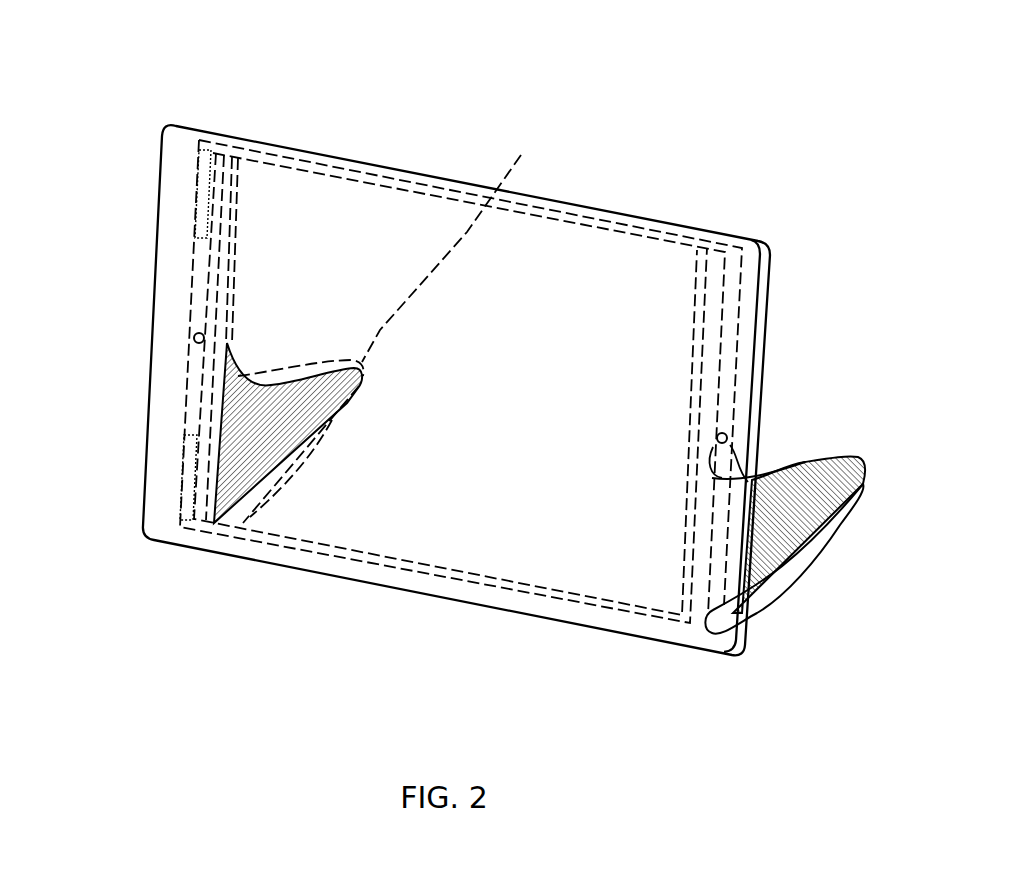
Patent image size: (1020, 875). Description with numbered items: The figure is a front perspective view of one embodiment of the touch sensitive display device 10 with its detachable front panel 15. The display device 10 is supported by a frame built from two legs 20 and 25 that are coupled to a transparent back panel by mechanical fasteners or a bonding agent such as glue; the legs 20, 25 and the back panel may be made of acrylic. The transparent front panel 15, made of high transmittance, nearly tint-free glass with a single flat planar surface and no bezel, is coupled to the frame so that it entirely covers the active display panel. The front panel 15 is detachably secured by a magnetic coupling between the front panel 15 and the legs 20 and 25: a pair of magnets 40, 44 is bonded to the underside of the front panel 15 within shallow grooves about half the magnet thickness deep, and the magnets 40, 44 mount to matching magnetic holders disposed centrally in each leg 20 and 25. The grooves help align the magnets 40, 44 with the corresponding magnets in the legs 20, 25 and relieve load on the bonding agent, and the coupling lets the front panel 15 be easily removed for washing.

The touch sensitive display device 10 is at (456, 341).
The front panel 15 is at (360, 217).
The leg 20 is at (806, 467).
The leg 25 is at (372, 326).
The magnet 40 is at (194, 338).
The magnet 44 is at (723, 433).